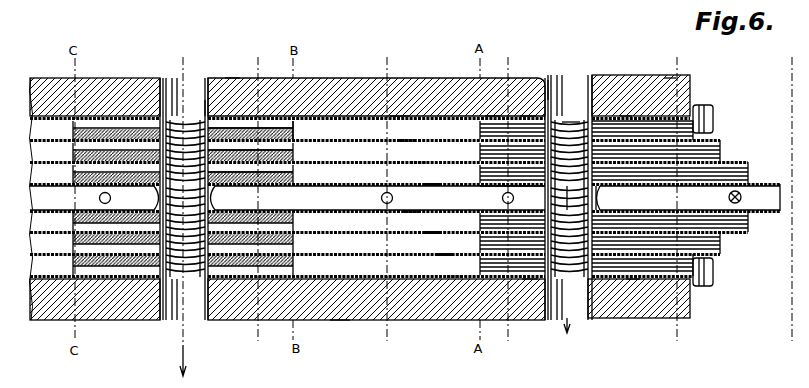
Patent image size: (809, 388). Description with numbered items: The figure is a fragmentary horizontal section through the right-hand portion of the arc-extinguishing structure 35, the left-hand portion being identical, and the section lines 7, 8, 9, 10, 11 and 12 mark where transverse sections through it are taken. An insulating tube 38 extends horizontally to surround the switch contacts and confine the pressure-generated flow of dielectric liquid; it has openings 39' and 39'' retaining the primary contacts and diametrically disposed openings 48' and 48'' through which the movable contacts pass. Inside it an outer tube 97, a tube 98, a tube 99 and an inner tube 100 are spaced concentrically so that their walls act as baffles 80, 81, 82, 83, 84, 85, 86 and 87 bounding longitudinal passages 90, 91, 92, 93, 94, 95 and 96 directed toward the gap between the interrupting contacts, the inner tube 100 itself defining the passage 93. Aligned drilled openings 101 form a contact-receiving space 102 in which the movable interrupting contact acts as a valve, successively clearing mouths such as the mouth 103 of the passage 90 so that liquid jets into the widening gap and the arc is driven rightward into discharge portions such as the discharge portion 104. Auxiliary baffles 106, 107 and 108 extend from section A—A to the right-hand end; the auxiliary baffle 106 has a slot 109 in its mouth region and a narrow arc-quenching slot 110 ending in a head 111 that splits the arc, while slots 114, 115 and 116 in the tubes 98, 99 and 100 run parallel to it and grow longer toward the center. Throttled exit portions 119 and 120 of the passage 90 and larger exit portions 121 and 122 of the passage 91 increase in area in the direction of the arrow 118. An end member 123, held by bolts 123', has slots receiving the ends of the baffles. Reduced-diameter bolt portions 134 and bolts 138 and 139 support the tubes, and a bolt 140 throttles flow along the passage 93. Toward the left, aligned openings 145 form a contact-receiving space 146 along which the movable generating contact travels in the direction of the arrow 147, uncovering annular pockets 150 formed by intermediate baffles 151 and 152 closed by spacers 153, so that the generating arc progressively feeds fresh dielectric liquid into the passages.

The section line 7- 7 is at (178, 60).
The section line 8- 8 is at (253, 60).
The section line 9- 9 is at (382, 60).
The section line 10- 10 is at (497, 57).
The section line 11- 11 is at (664, 57).
The section line 12- 12 is at (787, 60).
The arc-extinguishing structure 35 is at (348, 64).
The tube 38 is at (340, 322).
The opening 39' is at (166, 180).
The opening 39'' is at (566, 178).
The opening 48' is at (194, 233).
The opening 48'' is at (575, 239).
The baffle 80 is at (400, 115).
The baffle 81 is at (408, 140).
The baffle 82 is at (418, 161).
The baffle 83 is at (432, 183).
The baffle 84 is at (412, 213).
The baffle 85 is at (432, 234).
The baffle 86 is at (445, 256).
The baffle 87 is at (455, 278).
The longitudinal passage 90 is at (376, 130).
The longitudinal passage 91 is at (376, 152).
The longitudinal passage 92 is at (376, 174).
The longitudinal passage 93 is at (378, 198).
The longitudinal passage 94 is at (376, 222).
The longitudinal passage 95 is at (376, 243).
The longitudinal passage 96 is at (376, 265).
The outer tube 97 is at (366, 119).
The tube 98 is at (367, 141).
The tube 99 is at (370, 163).
The inner tube 100 is at (488, 186).
The openings 101 is at (557, 94).
The contact-receiving space 102 is at (571, 128).
The mouth 103 is at (528, 128).
The discharge portion 104 is at (612, 80).
The auxiliary baffle 106 is at (693, 90).
The auxiliary baffle 107 is at (718, 133).
The auxiliary baffle 108 is at (748, 152).
The slot 109 is at (492, 117).
The slot 110 is at (625, 128).
The head 111 is at (669, 88).
The slot 114 is at (566, 198).
The slot 115 is at (601, 198).
The slot 116 is at (637, 187).
The arrow 118 is at (530, 300).
The exit portion 119 is at (697, 108).
The exit portion 120 is at (713, 114).
The exit portion 121 is at (720, 145).
The exit portion 122 is at (720, 158).
The end member 123 is at (664, 299).
The bolts 123' is at (727, 272).
The reduced-diameter portion 134 is at (393, 198).
The bolts 138 is at (514, 198).
The bolts 139 is at (632, 228).
The bolt 140 is at (739, 194).
The openings 145 is at (162, 303).
The contact-receiving space 146 is at (170, 320).
The arrow 147 is at (187, 365).
The pockets 150 is at (148, 128).
The intermediate baffle 151 is at (232, 112).
The intermediate baffle 152 is at (212, 112).
The spacers 153 is at (295, 125).